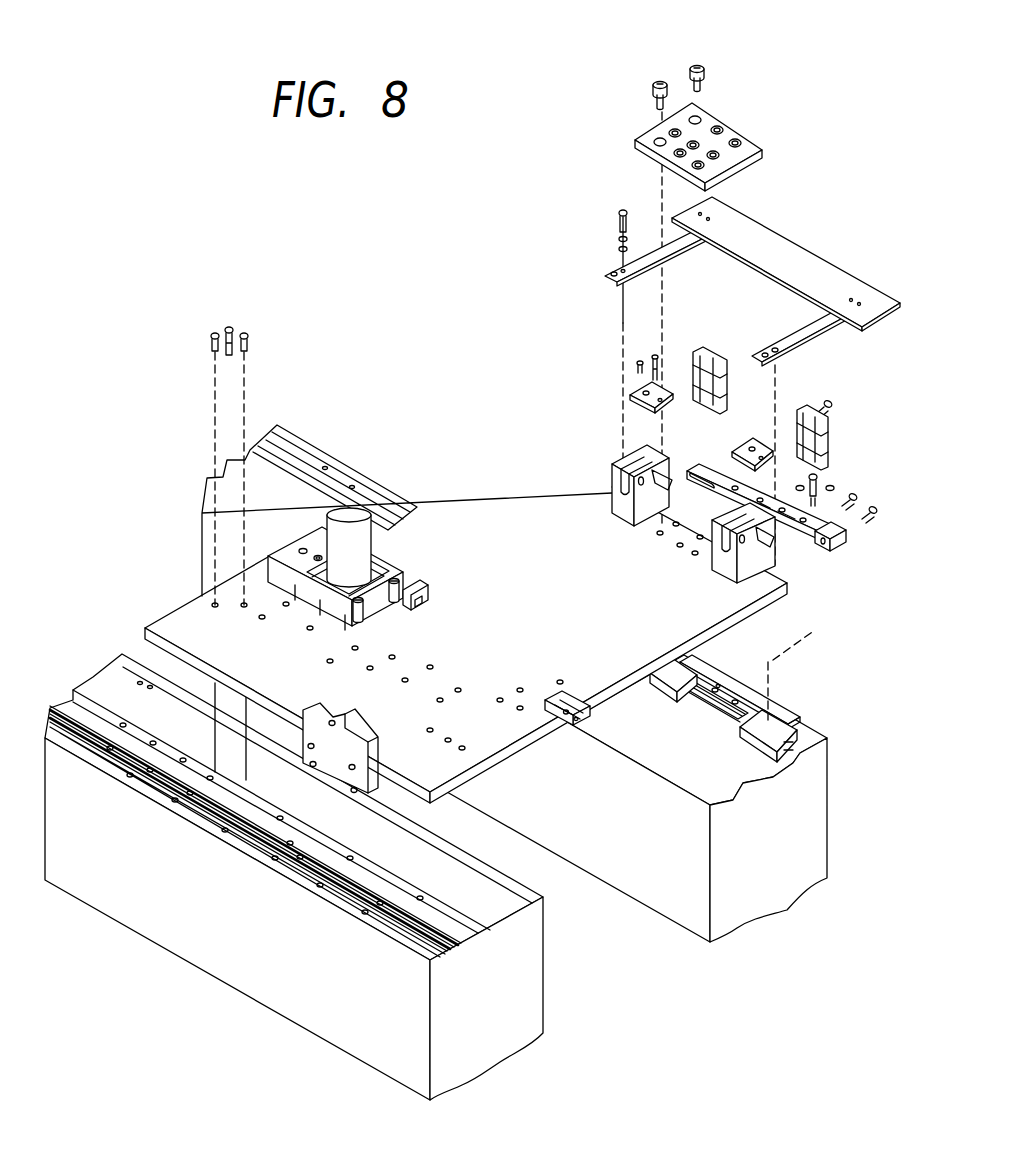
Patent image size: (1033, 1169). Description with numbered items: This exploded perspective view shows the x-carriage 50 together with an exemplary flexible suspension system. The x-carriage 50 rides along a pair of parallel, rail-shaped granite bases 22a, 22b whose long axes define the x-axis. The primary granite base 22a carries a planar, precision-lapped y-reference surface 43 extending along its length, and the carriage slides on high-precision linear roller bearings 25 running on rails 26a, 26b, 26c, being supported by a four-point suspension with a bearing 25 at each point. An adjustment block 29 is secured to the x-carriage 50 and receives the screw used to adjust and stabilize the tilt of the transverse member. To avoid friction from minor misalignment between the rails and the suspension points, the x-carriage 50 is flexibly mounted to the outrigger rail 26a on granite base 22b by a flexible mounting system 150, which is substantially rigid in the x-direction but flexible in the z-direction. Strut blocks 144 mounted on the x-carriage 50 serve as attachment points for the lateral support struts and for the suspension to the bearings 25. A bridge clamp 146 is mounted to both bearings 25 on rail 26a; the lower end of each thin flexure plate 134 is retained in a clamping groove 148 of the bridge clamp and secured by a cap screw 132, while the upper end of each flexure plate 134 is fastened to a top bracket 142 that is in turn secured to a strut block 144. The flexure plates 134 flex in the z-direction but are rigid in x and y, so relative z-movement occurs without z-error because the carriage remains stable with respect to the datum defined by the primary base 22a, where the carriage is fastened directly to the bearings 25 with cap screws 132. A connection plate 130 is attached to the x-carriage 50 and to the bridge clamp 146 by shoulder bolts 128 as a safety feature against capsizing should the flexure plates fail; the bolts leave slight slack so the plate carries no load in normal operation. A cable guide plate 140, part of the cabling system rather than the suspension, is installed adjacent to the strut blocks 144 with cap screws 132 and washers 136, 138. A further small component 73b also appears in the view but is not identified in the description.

The shoulder bolt 128 is at (690, 76).
The connection plate 130 is at (634, 140).
The cap screw 132 is at (214, 334).
The flexure plate 134 is at (724, 392).
The washer 136 is at (620, 238).
The washer 138 is at (618, 248).
The cable guide plate 140 is at (850, 276).
The top bracket 142 is at (640, 388).
The strut block 144 is at (614, 490).
The bridge clamp 146 is at (826, 550).
The clamping groove 148 is at (717, 483).
The flexible mounting system 150 is at (673, 482).
The x-carriage 50 is at (532, 647).
The bracket 73b is at (572, 703).
The bearing 25 is at (675, 663).
The outrigger rail 26a is at (700, 707).
The rail 26b is at (383, 910).
The rail 26c is at (477, 921).
The primary granite base 22a is at (503, 873).
The granite base 22b is at (688, 898).
The y-reference surface 43 is at (105, 692).
The adjustment block 29 is at (313, 707).